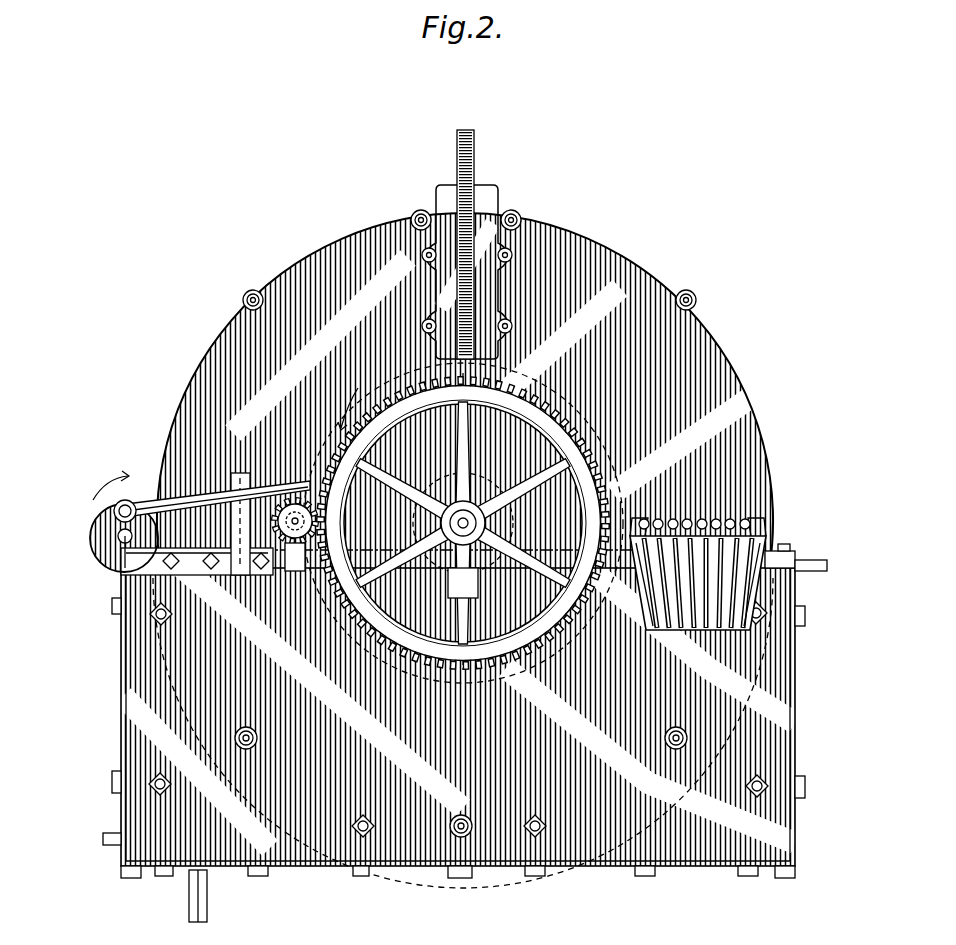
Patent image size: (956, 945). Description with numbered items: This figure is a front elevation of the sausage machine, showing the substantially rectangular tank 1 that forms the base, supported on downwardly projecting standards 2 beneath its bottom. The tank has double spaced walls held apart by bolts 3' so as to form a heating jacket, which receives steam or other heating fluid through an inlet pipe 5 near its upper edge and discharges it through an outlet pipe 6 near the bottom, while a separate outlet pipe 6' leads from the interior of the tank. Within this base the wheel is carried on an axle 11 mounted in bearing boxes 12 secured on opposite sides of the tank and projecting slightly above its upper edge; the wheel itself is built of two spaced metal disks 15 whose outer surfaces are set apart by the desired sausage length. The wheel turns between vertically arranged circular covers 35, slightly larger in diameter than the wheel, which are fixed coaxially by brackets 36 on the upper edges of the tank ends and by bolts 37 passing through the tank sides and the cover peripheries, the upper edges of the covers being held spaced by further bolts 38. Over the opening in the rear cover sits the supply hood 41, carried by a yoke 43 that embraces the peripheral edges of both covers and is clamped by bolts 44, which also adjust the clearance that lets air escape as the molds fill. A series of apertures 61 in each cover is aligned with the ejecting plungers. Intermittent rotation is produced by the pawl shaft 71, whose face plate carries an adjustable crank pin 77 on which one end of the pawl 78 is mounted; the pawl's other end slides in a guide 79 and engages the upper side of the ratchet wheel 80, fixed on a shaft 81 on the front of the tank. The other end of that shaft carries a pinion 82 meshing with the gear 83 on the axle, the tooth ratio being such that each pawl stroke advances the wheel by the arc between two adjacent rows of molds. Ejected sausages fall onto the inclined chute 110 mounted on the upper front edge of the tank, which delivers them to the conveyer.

The tank 1 is at (765, 686).
The standards 2 is at (153, 870).
The bolts 3' is at (457, 745).
The inlet pipe 5 is at (808, 552).
The outlet pipe 6 is at (97, 833).
The outlet pipe 6' is at (212, 896).
The axle 11 is at (448, 527).
The bearing boxes 12 is at (442, 575).
The metal disks 15 is at (463, 523).
The circular covers 35 is at (327, 393).
The brackets 36 is at (770, 538).
The bolts 37 is at (227, 733).
The bolts 38 is at (240, 284).
The supply hood 41 is at (430, 180).
The yoke 43 is at (467, 140).
The bolts 44 is at (503, 316).
The apertures 61 is at (668, 510).
The pawl shaft 71 is at (110, 535).
The crank pin 77 is at (122, 492).
The pawl 78 is at (168, 494).
The guide 79 is at (232, 465).
The ratchet wheel 80 is at (280, 535).
The shaft 81 is at (300, 470).
The pinion 82 is at (295, 560).
The gear 83 is at (350, 600).
The inclined chute 110 is at (738, 622).